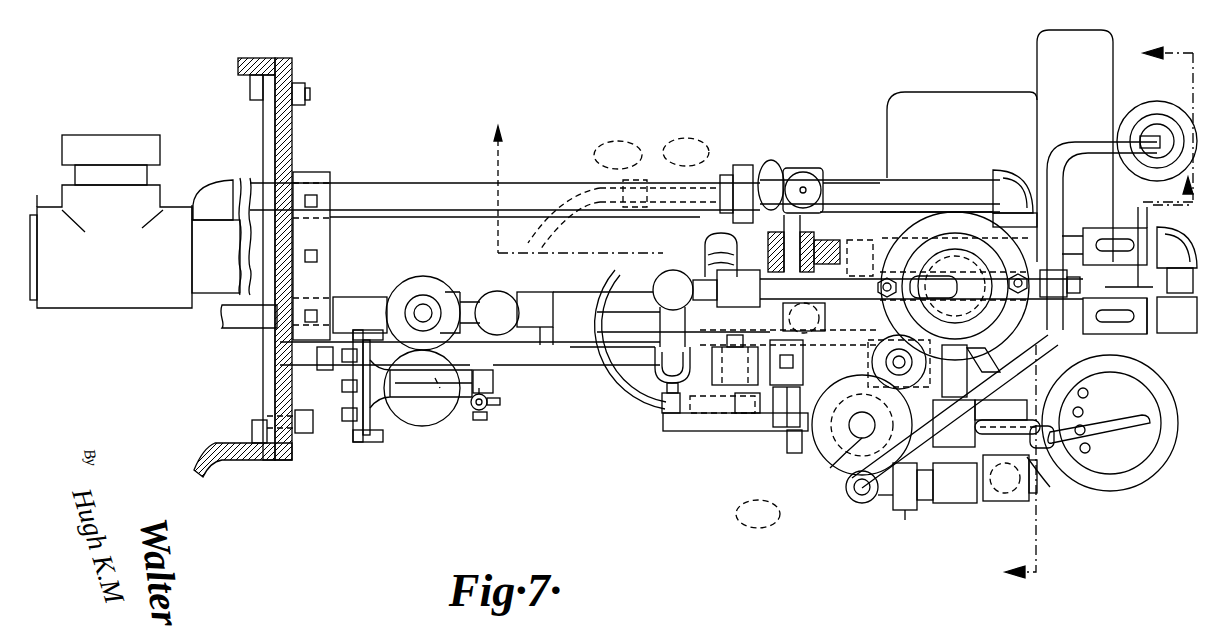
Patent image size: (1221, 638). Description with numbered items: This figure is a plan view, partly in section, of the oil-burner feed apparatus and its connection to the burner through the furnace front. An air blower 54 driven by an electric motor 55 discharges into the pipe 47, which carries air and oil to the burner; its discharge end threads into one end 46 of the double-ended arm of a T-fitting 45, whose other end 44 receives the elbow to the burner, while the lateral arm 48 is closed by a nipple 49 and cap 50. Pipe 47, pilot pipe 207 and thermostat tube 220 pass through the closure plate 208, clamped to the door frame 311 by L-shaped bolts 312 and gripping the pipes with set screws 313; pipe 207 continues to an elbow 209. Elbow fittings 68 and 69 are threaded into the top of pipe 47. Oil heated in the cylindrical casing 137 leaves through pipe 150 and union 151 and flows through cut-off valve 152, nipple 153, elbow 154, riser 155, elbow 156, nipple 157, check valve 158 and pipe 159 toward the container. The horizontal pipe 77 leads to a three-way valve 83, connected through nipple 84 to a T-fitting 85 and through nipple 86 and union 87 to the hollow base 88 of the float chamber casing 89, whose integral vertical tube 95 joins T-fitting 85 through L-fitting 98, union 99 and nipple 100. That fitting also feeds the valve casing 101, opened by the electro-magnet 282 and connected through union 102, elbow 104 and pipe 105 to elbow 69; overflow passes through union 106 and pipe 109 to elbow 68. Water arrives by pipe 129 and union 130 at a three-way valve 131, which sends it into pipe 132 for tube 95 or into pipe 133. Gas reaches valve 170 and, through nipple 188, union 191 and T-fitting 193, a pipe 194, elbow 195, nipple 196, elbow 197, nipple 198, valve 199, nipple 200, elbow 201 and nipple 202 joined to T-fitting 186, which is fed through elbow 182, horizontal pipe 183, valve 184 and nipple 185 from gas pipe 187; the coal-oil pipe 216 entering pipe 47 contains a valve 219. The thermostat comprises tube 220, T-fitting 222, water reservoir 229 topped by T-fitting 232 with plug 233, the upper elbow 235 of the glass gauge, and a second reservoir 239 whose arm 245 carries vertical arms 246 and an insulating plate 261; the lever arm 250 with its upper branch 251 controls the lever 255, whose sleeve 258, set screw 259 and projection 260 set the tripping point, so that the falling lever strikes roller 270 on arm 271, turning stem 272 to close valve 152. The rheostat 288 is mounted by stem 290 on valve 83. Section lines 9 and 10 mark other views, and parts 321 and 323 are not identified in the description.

The section line 9- 9 is at (1099, 319).
The section line 10- 10 is at (839, 177).
The end of T-fitting arm 44 is at (47, 308).
The T-fitting 45 is at (108, 292).
The end of T-fitting arm 46 is at (181, 213).
The pipe 47 is at (216, 256).
The arm of T-fitting 48 is at (60, 200).
The nipple 49 is at (147, 174).
The cap 50 is at (108, 134).
The air blower 54 is at (1075, 146).
The electric motor 55 is at (962, 135).
The elbow pipe fitting 68 is at (705, 250).
The elbow pipe fitting 69 is at (865, 260).
The horizontal pipe 77 is at (954, 371).
The three-way valve 83 is at (943, 407).
The nipple 84 is at (939, 474).
The T-fitting 85 is at (955, 483).
The nipple 86 is at (915, 479).
The union 87 is at (862, 425).
The hollow base 88 is at (855, 450).
The float chamber casing 89 is at (843, 432).
The vertical tube 95 is at (858, 503).
The L-fitting 98 is at (880, 500).
The union 99 is at (906, 510).
The nipple 100 is at (1000, 503).
The valve casing 101 is at (1005, 503).
The union 102 is at (1037, 440).
The elbow 104 is at (955, 411).
The pipe 105 is at (983, 361).
The union 106 is at (790, 455).
The pipe 109 is at (630, 339).
The pipe 129 is at (1089, 142).
The union 130 is at (1158, 124).
The three-way valve 131 is at (1090, 235).
The pipe 132 is at (962, 300).
The pipe 133 is at (955, 286).
The cylindrical vertical casing 137 is at (912, 380).
The pipe 150 is at (774, 347).
The union 151 is at (856, 425).
The cut-off valve 152 is at (735, 360).
The nipple 153 is at (691, 363).
The elbow 154 is at (658, 348).
The riser 155 is at (660, 333).
The elbow 156 is at (662, 283).
The nipple 157 is at (700, 280).
The check valve 158 is at (738, 288).
The pipe 159 is at (921, 288).
The valve 170 is at (830, 240).
The elbow 182 is at (804, 318).
The horizontal pipe 183 is at (1110, 422).
The valve 184 is at (1147, 340).
The nipple 185 is at (1142, 338).
The T-fitting 186 is at (1177, 315).
The pipe 187 is at (1157, 337).
The nipple 188 is at (775, 241).
The union 191 is at (798, 168).
The T-fitting 193 is at (818, 170).
The pipe 194 is at (851, 190).
The elbow 195 is at (1007, 183).
The nipple 196 is at (1023, 218).
The elbow 197 is at (987, 197).
The nipple 198 is at (1175, 212).
The valve 199 is at (1119, 251).
The nipple 200 is at (1177, 247).
The elbow 201 is at (1179, 250).
The nipple 202 is at (1180, 280).
The pipe 207 is at (243, 178).
The closure plate 208 is at (275, 387).
The elbow 209 is at (213, 200).
The pipe 216 is at (612, 187).
The valve 219 is at (650, 195).
The horizontal tube 220 is at (230, 330).
The T-fitting 222 is at (352, 333).
The reservoir 229 is at (407, 292).
The T-fitting 232 is at (447, 300).
The plug 233 is at (423, 302).
The upper elbow 235 is at (489, 313).
The second reservoir 239 is at (427, 413).
The arm 245 is at (390, 402).
The vertical arms 246 is at (371, 443).
The arm 250 is at (410, 385).
The upper branch 251 is at (480, 420).
The lever 255 is at (458, 385).
The sleeve 258 is at (492, 412).
The set screw 259 is at (500, 401).
The lateral projection 260 is at (494, 371).
The insulating plate 261 is at (358, 445).
The anti-friction roller 270 is at (660, 405).
The arm 271 is at (692, 432).
The rotary operating stem 272 is at (724, 403).
The electro-magnet 282 is at (1012, 501).
The rheostat 288 is at (1090, 437).
The stem 290 is at (1089, 390).
The door frame 311 is at (292, 71).
The L-shaped bolts 312 is at (310, 93).
The set screws 313 is at (312, 308).
The block 321 is at (643, 318).
The rod 323 is at (553, 343).